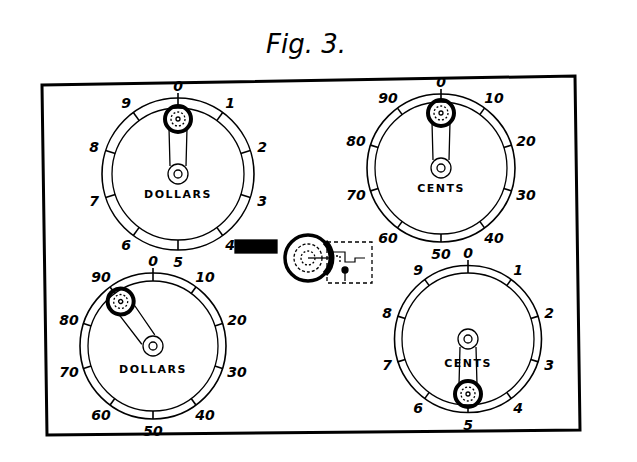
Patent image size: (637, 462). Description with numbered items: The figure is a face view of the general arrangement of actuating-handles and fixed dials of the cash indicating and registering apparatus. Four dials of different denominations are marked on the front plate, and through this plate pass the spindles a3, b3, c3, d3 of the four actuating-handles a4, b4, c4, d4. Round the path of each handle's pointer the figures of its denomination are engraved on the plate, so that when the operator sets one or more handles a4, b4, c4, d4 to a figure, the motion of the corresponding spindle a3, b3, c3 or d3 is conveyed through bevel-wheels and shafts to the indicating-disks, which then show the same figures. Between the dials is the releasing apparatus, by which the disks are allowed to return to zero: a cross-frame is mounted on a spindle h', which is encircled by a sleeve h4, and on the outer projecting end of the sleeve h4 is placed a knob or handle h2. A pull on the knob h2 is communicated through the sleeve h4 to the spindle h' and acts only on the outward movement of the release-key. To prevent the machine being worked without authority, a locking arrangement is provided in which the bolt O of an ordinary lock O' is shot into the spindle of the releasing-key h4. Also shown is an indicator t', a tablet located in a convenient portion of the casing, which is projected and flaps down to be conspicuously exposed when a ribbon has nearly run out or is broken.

The spindle of actuating-handle b3 is at (188, 173).
The actuating-handle b4 is at (178, 136).
The spindle of actuating-handle c3 is at (451, 168).
The actuating-handle c4 is at (441, 130).
The spindle of actuating-handle a3 is at (164, 347).
The actuating-handle a4 is at (142, 325).
The spindle of actuating-handle d3 is at (479, 338).
The actuating-handle d4 is at (474, 357).
The spindle h' is at (313, 279).
The knob or handle h2 is at (303, 236).
The sleeve h4 is at (300, 268).
The bolt O is at (349, 253).
The lock O' is at (353, 275).
The indicator t' is at (254, 255).